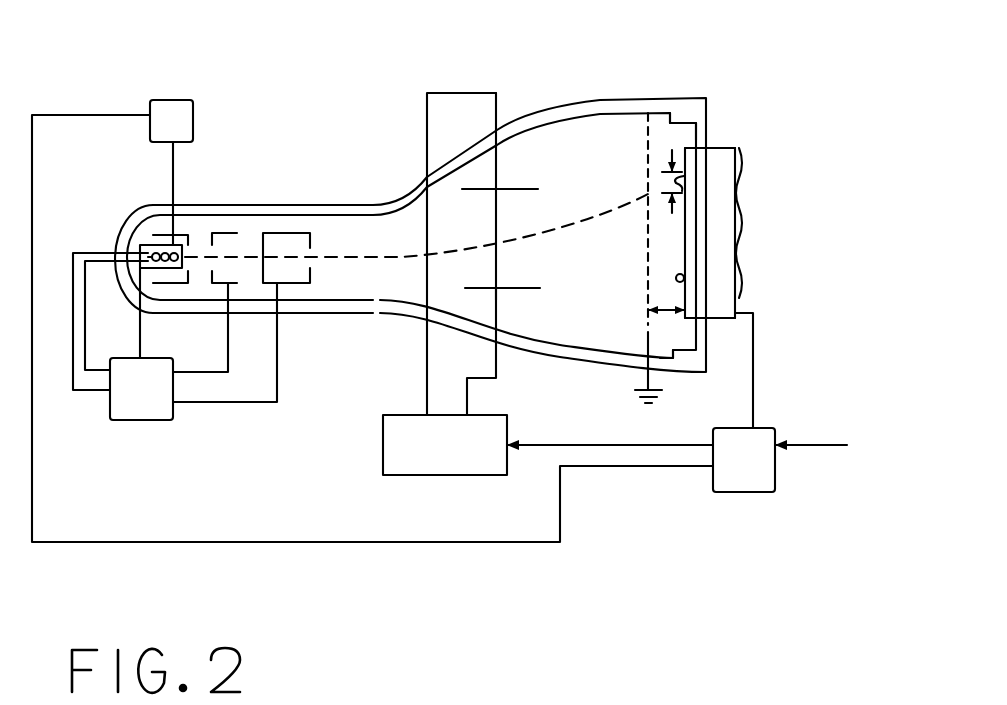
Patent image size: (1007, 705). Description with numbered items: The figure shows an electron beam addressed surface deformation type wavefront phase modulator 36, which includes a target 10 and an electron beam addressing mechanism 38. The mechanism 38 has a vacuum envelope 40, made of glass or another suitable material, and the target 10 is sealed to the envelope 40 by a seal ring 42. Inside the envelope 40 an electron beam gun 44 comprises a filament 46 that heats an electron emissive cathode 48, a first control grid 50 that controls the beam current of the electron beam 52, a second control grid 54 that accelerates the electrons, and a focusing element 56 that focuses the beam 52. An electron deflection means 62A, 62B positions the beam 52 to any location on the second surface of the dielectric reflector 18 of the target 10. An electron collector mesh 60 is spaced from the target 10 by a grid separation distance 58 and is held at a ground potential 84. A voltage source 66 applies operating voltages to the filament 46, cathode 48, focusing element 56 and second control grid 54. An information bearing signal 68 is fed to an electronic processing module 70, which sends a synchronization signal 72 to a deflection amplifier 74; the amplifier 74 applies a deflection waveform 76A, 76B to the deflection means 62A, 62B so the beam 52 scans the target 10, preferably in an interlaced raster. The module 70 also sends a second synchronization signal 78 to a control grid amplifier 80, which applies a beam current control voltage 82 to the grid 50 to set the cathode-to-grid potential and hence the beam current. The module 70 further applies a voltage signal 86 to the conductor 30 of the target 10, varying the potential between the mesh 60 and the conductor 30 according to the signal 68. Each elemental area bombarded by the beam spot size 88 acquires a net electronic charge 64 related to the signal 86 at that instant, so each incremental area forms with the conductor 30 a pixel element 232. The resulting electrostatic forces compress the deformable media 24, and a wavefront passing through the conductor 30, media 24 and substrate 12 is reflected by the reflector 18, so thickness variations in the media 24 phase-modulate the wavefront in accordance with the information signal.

The target 10 is at (732, 143).
The substrate 12 is at (703, 243).
The dielectric reflector 18 is at (697, 267).
The media 24 is at (738, 294).
The conductor 30 is at (741, 187).
The pixel element 232 is at (717, 198).
The electron beam addressed phase modulator 36 is at (617, 93).
The electron beam addressing mechanism 38 is at (283, 190).
The vacuum envelope 40 is at (343, 207).
The seal ring 42 is at (702, 133).
The electron beam gun 44 is at (203, 228).
The filament 46 is at (143, 254).
The electron emissive cathode 48 is at (152, 243).
The first control grid 50 is at (185, 227).
The electron beam 52 is at (410, 262).
The second control grid 54 is at (219, 287).
The focusing element 56 is at (297, 287).
The grid separation distance 58 is at (665, 320).
The electron collector mesh 60 is at (647, 213).
The electron deflection means 62A is at (510, 187).
The electron deflection means 62B is at (510, 291).
The electronic charge 64 is at (665, 280).
The voltage source 66 is at (148, 402).
The information bearing signal 68 is at (813, 460).
The electronic processing module 70 is at (740, 480).
The synchronization signal 72 is at (588, 447).
The deflection amplifier 74 is at (472, 462).
The deflection waveform 76A is at (463, 393).
The deflection waveform 76B is at (420, 382).
The second synchronization signal 78 is at (203, 543).
The control grid amplifier 80 is at (167, 110).
The beam current control voltage 82 is at (177, 168).
The ground potential 84 is at (632, 395).
The voltage signal 86 is at (745, 390).
The spot size 88 is at (667, 158).